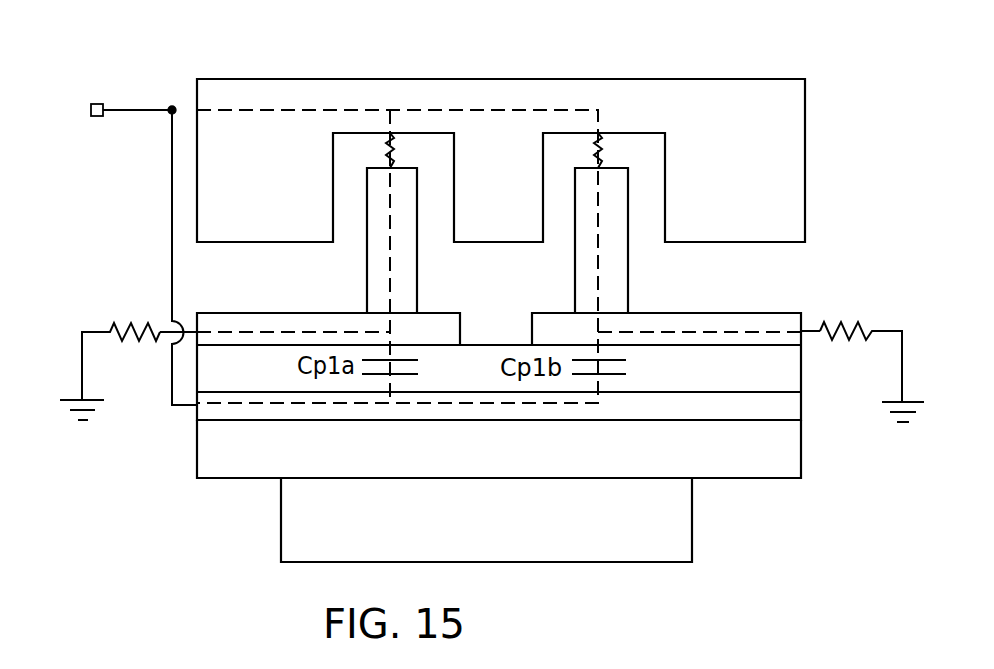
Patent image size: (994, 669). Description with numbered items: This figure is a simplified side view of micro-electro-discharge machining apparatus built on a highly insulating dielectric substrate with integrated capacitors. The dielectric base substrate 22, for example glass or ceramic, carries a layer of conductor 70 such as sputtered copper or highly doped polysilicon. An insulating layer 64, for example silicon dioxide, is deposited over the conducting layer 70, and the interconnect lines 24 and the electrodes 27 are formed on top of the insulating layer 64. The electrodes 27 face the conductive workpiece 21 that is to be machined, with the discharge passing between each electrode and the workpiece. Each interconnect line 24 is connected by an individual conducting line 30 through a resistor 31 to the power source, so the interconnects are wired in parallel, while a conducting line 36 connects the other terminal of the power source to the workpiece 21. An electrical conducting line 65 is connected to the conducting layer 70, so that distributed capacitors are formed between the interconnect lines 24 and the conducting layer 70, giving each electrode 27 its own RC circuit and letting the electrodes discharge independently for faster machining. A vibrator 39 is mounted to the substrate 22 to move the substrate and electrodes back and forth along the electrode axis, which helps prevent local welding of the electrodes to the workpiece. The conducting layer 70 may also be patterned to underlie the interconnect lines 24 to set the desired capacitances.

The workpiece 21 is at (715, 79).
The substrate 22 is at (727, 465).
The base interconnects 24 is at (253, 313).
The electrodes 27 is at (367, 267).
The conducting line 30 is at (167, 334).
The resistor 31 is at (148, 325).
The conducting line 36 is at (141, 108).
The vibrator 39 is at (655, 562).
The insulating layer 64 is at (218, 382).
The electrical conducting line 65 is at (172, 188).
The conducting layer 70 is at (801, 402).